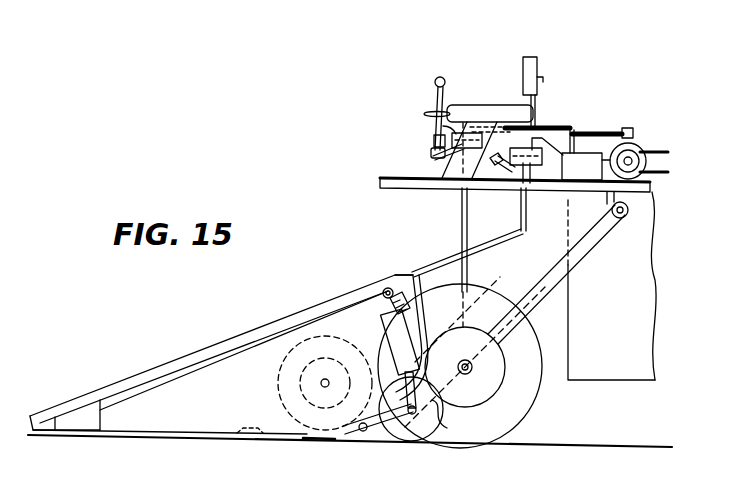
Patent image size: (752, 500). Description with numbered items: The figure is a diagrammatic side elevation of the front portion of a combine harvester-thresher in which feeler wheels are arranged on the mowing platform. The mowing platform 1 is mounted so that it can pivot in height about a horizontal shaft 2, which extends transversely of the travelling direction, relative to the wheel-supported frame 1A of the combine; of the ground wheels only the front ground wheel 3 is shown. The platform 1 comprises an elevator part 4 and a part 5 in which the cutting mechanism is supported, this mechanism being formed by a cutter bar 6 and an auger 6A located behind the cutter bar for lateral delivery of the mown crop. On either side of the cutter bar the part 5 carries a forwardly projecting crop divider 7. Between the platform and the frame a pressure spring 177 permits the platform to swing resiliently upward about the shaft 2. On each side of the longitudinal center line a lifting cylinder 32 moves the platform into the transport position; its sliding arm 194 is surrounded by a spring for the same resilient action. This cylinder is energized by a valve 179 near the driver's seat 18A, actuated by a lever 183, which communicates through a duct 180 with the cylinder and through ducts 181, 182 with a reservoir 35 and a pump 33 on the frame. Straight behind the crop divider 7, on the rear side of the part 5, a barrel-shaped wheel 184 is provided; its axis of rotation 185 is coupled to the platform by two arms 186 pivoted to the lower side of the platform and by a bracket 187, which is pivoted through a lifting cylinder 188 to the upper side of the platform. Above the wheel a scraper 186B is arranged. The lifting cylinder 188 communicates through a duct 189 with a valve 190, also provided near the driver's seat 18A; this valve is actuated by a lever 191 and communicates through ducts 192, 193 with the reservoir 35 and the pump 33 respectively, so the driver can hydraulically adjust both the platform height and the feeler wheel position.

The mowing platform 1 is at (303, 443).
The frame 1A is at (639, 290).
The horizontal shaft 2 is at (628, 213).
The ground wheel 3 is at (528, 410).
The elevator part 4 is at (513, 243).
The platform part 5 is at (332, 443).
The cutter bar 6 is at (241, 427).
The auger 6A is at (280, 386).
The crop divider 7 is at (196, 355).
The driver's seat 18A is at (536, 56).
The lifting cylinder 32 is at (487, 294).
The pump 33 is at (643, 150).
The reservoir 35 is at (626, 128).
The pressure spring 177 is at (397, 289).
The valve 179 is at (432, 137).
The duct 180 is at (462, 212).
The duct 181 is at (532, 127).
The duct 182 is at (580, 130).
The lever 183 is at (435, 82).
The wheel 184 is at (456, 443).
The axis of rotation 185 is at (414, 442).
The arm 186 is at (377, 440).
The scraper 186B is at (432, 387).
The bracket 187 is at (450, 413).
The lifting cylinder 188 is at (383, 290).
The duct 189 is at (457, 256).
The valve 190 is at (530, 212).
The lever 191 is at (488, 94).
The duct 192 is at (586, 166).
The duct 193 is at (632, 143).
The arm 194 is at (419, 282).